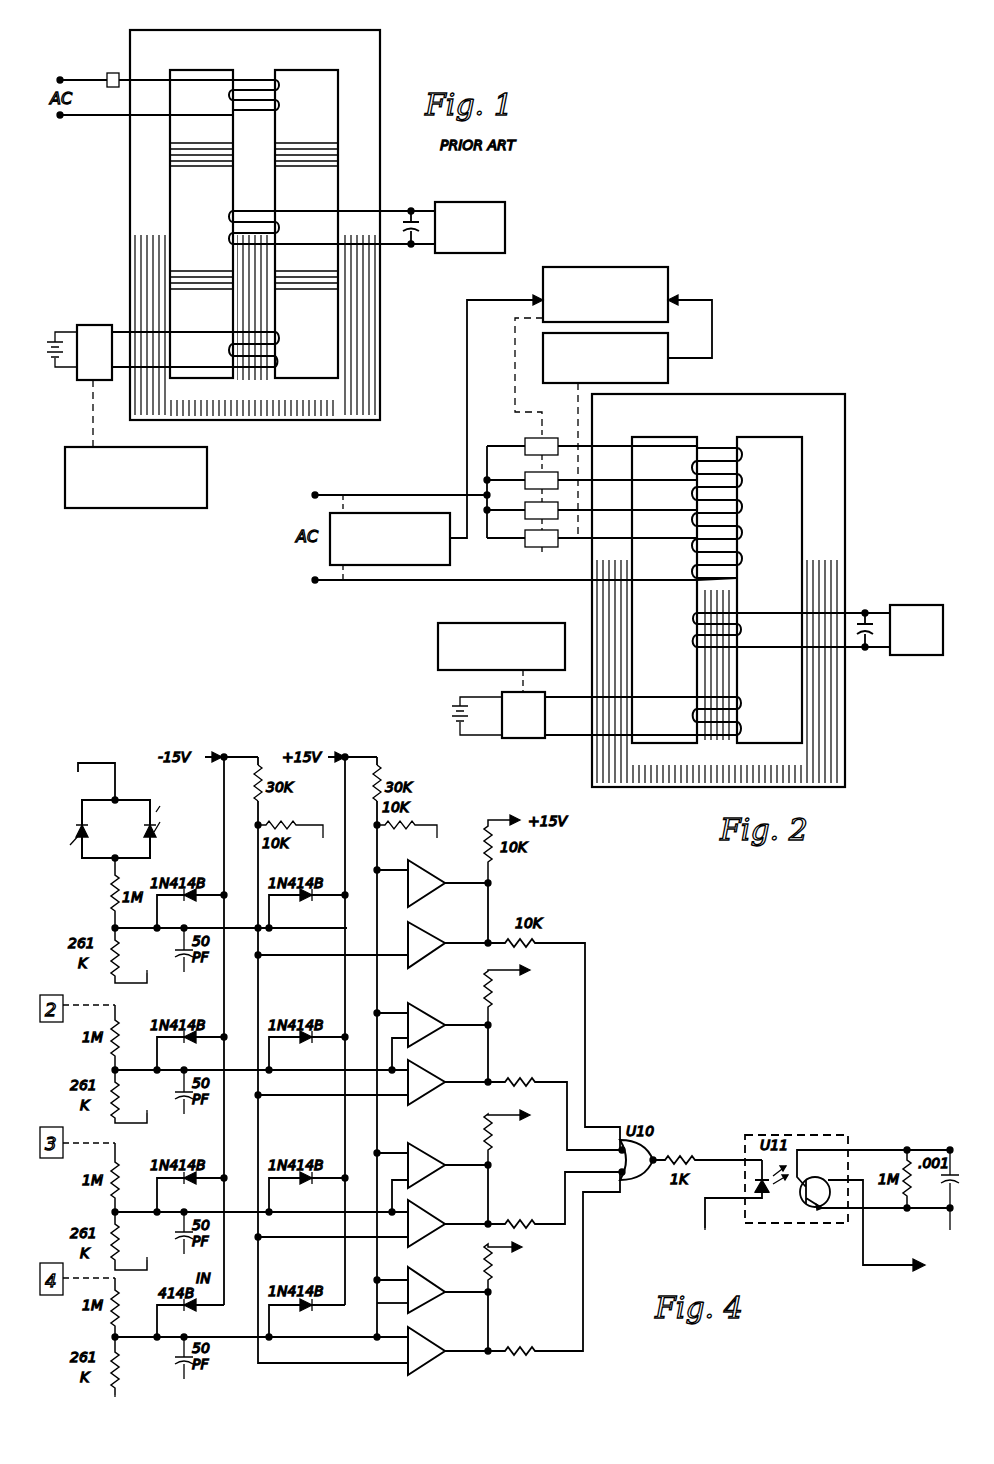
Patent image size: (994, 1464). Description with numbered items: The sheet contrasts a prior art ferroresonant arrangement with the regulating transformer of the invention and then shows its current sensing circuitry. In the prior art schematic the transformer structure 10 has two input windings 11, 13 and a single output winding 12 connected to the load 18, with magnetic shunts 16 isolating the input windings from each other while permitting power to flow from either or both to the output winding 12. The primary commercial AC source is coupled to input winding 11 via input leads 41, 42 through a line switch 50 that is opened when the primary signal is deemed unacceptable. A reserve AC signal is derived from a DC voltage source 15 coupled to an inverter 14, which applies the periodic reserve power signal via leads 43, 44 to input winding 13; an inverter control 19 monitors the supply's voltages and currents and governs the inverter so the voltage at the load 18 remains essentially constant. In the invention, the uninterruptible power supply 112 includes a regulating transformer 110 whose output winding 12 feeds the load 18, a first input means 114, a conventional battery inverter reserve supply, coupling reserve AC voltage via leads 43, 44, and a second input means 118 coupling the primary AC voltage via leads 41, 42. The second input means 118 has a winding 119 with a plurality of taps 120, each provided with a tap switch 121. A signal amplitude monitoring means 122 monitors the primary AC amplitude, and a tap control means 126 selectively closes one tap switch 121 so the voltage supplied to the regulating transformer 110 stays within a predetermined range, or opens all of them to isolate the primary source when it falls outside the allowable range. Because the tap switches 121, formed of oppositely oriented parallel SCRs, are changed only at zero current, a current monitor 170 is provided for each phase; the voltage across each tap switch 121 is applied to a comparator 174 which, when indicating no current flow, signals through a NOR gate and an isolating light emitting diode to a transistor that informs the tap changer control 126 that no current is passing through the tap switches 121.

In FIG. 1, the transformer structure 10 is at (340, 47).
In FIG. 1, the input winding 11 is at (281, 101).
In FIG. 1, the output winding 12 is at (232, 218).
In FIG. 2, the output winding 12 is at (695, 634).
In FIG. 1, the input winding 13 is at (282, 353).
In FIG. 2, the input winding 13 is at (738, 712).
In FIG. 1, the inverter 14 is at (88, 378).
In FIG. 2, the inverter 14 is at (528, 741).
In FIG. 1, the DC voltage source 15 is at (56, 335).
In FIG. 2, the DC voltage source 15 is at (455, 708).
In FIG. 1, the magnetic shunts 16 is at (207, 150).
In FIG. 1, the load 18 is at (497, 204).
In FIG. 2, the load 18 is at (906, 604).
In FIG. 1, the inverter control 19 is at (142, 510).
In FIG. 2, the inverter control 19 is at (512, 623).
In FIG. 1, the input lead 41 is at (92, 80).
In FIG. 2, the input lead 41 is at (360, 496).
In FIG. 4, the input lead 41 is at (510, 1097).
In FIG. 1, the input lead 42 is at (122, 116).
In FIG. 2, the input lead 42 is at (328, 586).
In FIG. 1, the lead 43 is at (208, 327).
In FIG. 2, the lead 43 is at (578, 689).
In FIG. 1, the lead 44 is at (208, 364).
In FIG. 2, the lead 44 is at (575, 740).
In FIG. 1, the line switch 50 is at (113, 72).
In FIG. 2, the regulating transformer 110 is at (828, 412).
In FIG. 2, the uninterruptible power supply 112 is at (852, 430).
In FIG. 2, the first input means 114 is at (488, 745).
In FIG. 2, the second input means 118 is at (376, 596).
In FIG. 2, the winding 119 is at (740, 530).
In FIG. 2, the taps 120 is at (500, 480).
In FIG. 2, the tap switch 121 is at (556, 556).
In FIG. 4, the tap switch 121 is at (112, 862).
In FIG. 2, the signal amplitude monitoring means 122 is at (420, 512).
In FIG. 2, the tap control means 126 is at (660, 267).
In FIG. 2, the current monitor 170 is at (670, 380).
In FIG. 4, the current monitor 170 is at (598, 1008).
In FIG. 4, the comparator 174 is at (428, 898).